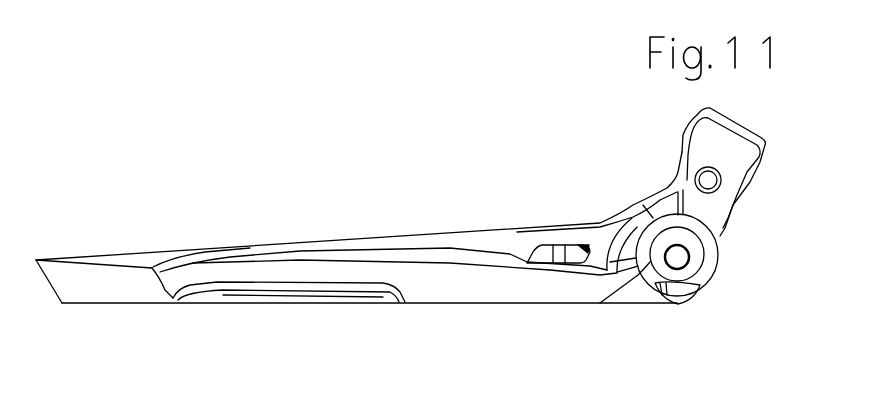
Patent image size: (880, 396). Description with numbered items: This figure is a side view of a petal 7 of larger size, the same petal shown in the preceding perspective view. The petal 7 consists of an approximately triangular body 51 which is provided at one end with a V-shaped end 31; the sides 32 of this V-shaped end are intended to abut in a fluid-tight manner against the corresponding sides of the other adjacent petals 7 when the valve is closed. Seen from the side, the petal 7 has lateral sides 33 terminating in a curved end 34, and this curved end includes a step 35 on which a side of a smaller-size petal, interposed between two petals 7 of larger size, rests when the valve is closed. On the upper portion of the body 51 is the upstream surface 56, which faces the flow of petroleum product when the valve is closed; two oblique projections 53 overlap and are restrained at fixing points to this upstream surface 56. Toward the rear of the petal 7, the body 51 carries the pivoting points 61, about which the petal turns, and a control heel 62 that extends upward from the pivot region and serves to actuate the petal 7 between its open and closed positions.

The petal 7 is at (435, 231).
The V-shaped end 31 is at (62, 258).
The sides 32 is at (92, 287).
The lateral sides 33 is at (478, 260).
The curved end 34 is at (268, 272).
The step 35 is at (212, 292).
The body 51 is at (490, 245).
The oblique projections 53 is at (565, 250).
The upstream surface 56 is at (322, 242).
The pivoting points 61 is at (705, 277).
The control heel 62 is at (735, 155).